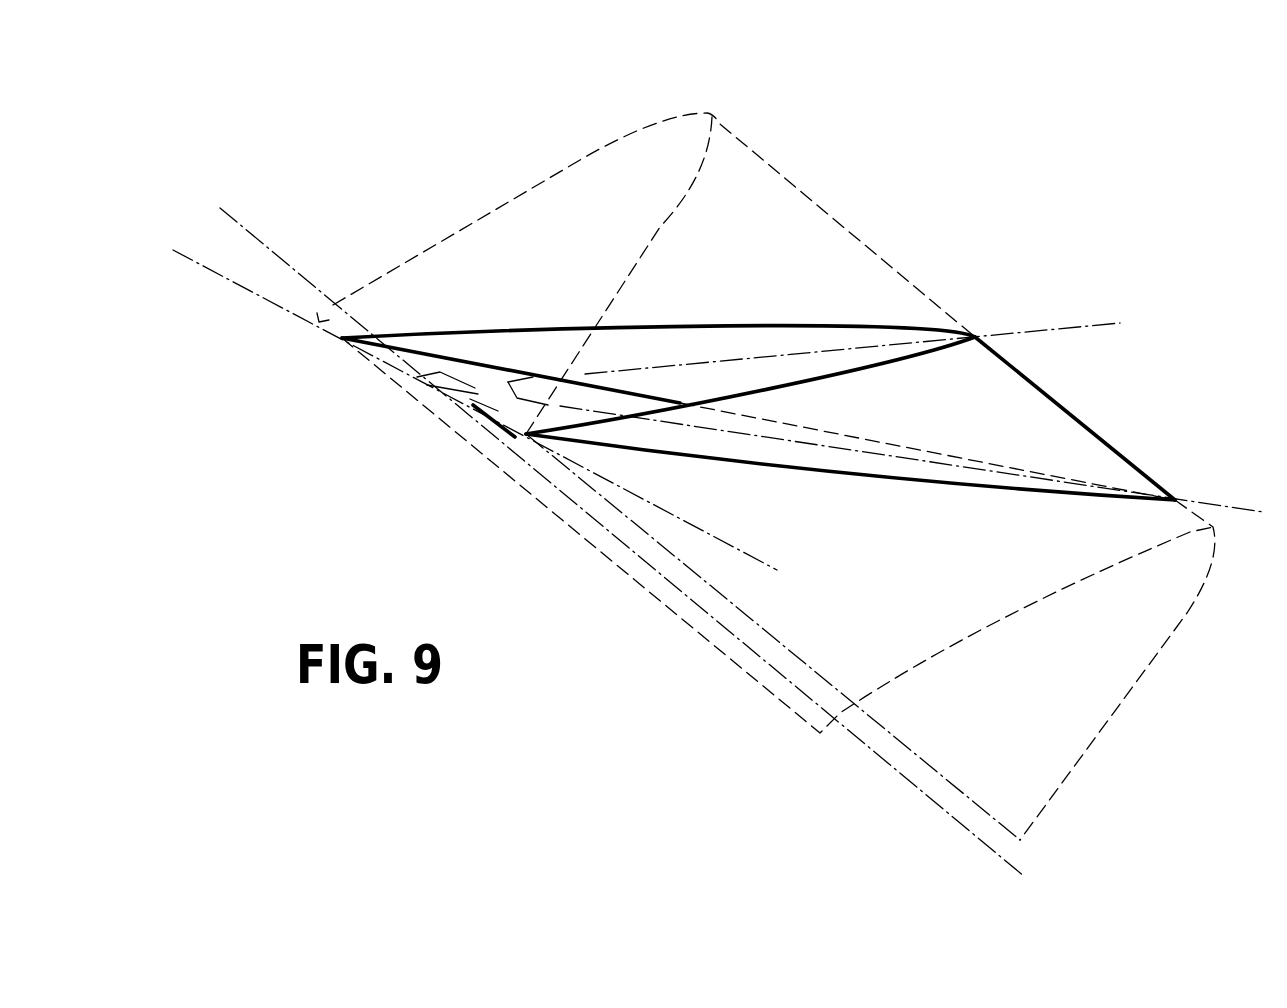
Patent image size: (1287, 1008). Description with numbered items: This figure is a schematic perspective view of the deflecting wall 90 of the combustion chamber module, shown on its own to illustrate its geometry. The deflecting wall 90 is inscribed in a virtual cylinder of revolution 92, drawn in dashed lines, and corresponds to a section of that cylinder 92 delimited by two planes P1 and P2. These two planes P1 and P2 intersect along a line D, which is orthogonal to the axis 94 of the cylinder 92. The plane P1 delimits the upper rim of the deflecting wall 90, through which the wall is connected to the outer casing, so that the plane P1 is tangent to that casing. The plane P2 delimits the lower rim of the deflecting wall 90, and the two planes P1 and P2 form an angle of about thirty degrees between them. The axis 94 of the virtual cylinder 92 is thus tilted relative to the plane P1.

The deflecting wall 90 is at (943, 483).
The virtual cylinder of revolution 92 is at (645, 127).
The axis of the cylinder 94 is at (232, 214).
The plane P1 is at (1094, 318).
The plane P2 is at (1245, 500).
The line D is at (760, 558).